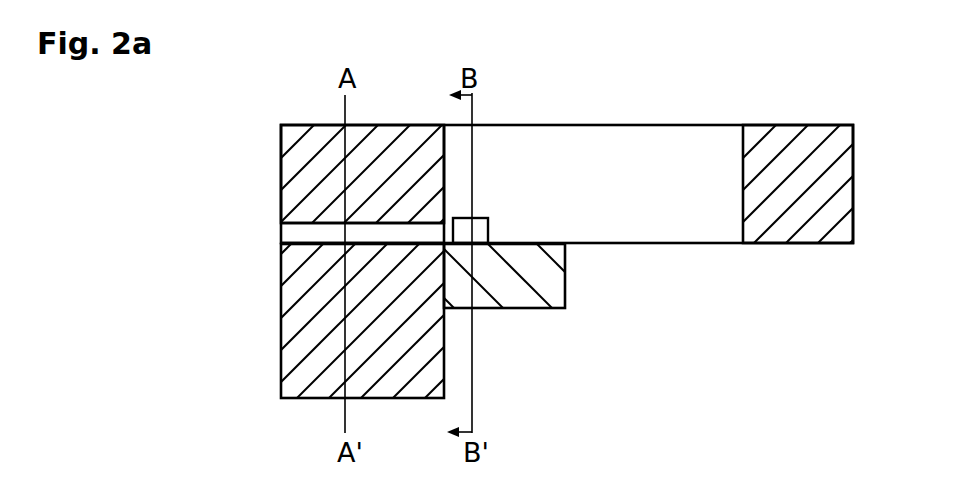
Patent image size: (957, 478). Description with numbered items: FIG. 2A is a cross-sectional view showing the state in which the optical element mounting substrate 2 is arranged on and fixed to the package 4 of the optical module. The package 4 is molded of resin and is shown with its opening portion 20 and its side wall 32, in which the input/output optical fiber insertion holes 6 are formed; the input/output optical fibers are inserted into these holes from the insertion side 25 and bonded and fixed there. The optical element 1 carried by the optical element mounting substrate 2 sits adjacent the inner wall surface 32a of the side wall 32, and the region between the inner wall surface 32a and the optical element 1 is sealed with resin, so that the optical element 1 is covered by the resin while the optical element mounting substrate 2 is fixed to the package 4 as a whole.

The optical element 1 is at (480, 228).
The optical element mounting substrate 2 is at (553, 281).
The package 4 is at (813, 145).
The input/output optical fiber insertion holes 6 is at (398, 232).
The opening portion 20 is at (700, 147).
The insertion side 25 is at (281, 306).
The side wall 32 is at (281, 370).
The inner wall surface 32a is at (446, 158).